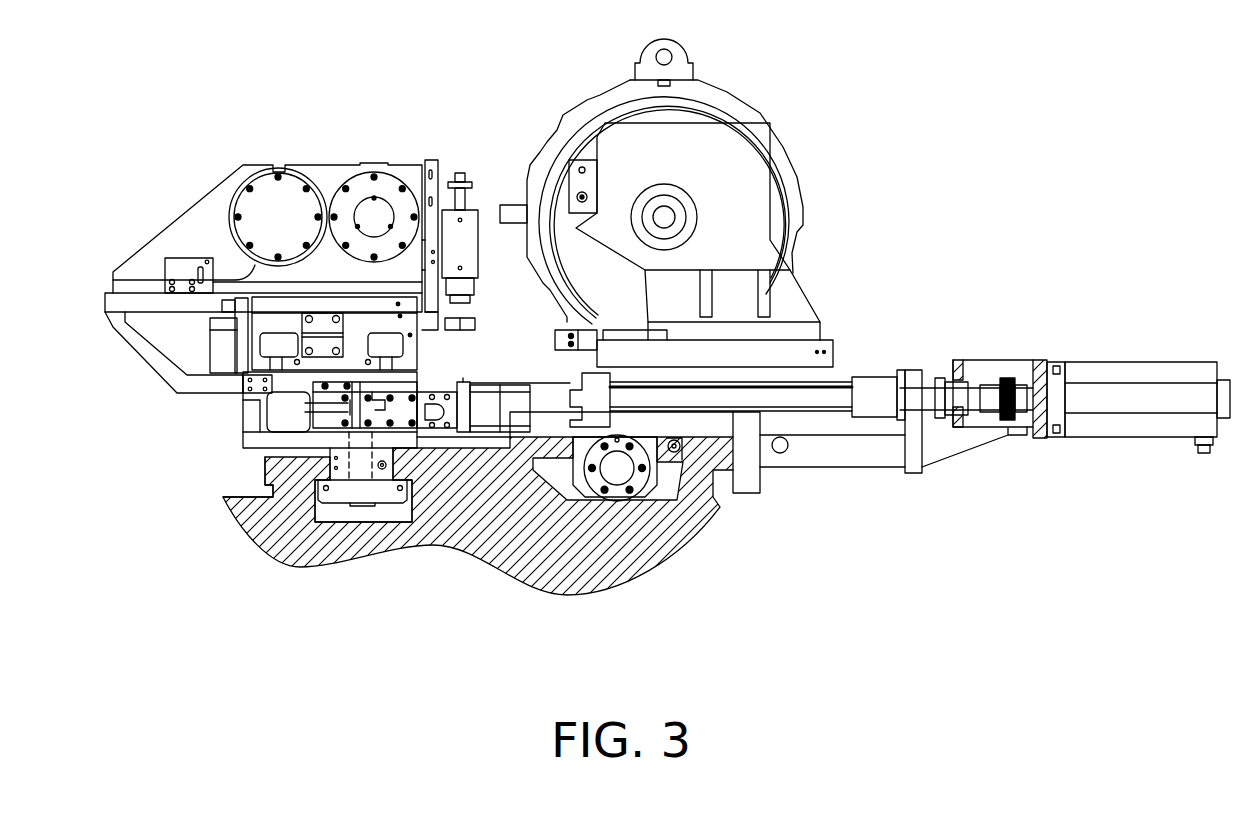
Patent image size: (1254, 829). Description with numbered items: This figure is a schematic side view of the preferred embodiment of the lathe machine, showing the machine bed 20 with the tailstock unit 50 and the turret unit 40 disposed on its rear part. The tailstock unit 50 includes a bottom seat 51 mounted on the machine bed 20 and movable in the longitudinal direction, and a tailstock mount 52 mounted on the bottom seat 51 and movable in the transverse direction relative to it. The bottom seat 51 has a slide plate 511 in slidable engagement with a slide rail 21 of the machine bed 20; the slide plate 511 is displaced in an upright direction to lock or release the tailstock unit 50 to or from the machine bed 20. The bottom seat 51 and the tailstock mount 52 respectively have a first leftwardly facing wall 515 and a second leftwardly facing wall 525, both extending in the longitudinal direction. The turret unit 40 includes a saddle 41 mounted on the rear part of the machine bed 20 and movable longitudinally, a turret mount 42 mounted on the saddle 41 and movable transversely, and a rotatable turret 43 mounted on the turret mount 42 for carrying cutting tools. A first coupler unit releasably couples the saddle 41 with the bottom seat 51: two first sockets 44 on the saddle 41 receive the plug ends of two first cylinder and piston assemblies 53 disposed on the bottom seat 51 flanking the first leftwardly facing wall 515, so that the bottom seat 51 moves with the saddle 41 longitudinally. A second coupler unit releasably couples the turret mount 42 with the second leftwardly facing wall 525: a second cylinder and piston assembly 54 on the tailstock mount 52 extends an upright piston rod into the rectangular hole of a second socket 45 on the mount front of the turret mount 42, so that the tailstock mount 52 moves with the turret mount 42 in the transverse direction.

The machine bed 20 is at (713, 533).
The slide rail 21 is at (273, 488).
The turret unit 40 is at (797, 123).
The saddle 41 is at (750, 457).
The turret mount 42 is at (745, 193).
The rotatable turret 43 is at (708, 92).
The first socket 44 is at (443, 430).
The second socket 45 is at (558, 340).
The tailstock unit 50 is at (328, 152).
The bottom seat 51 is at (255, 412).
The tailstock mount 52 is at (200, 232).
The first cylinder and piston assembly 53 is at (398, 410).
The second cylinder and piston assembly 54 is at (468, 223).
The slide plate 511 is at (340, 492).
The first leftwardly facing wall 515 is at (418, 388).
The second leftwardly facing wall 525 is at (420, 210).